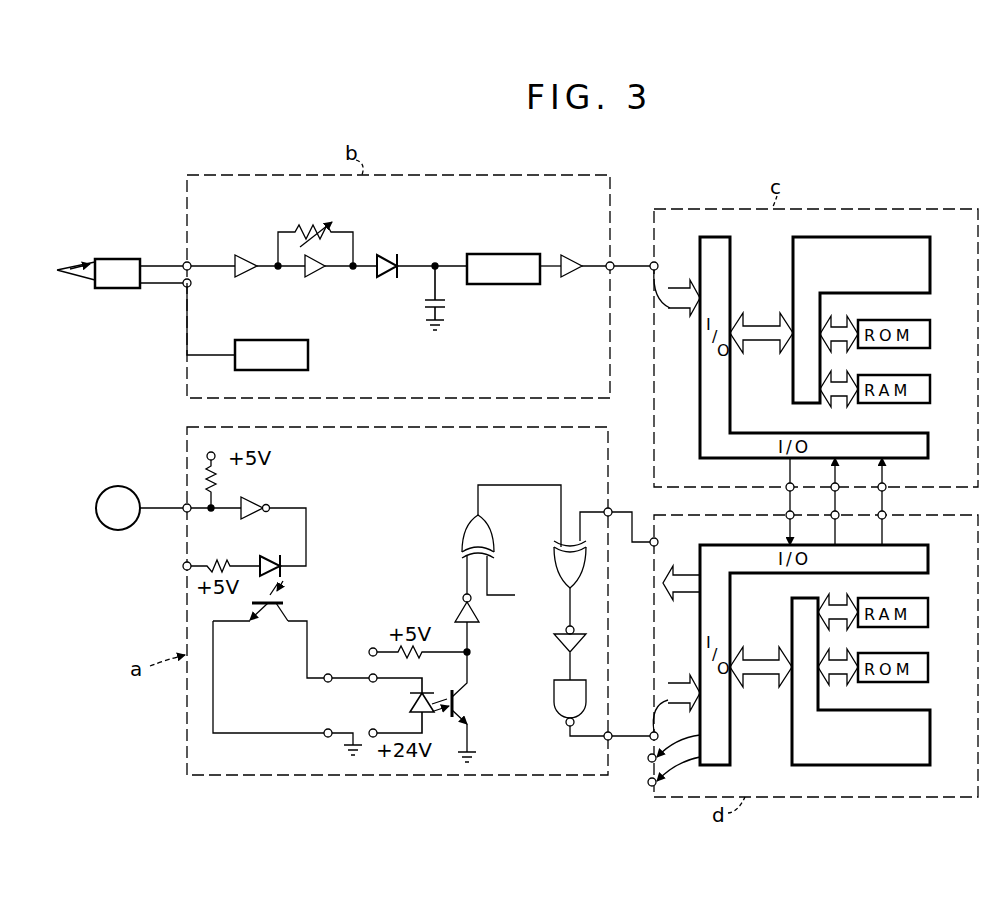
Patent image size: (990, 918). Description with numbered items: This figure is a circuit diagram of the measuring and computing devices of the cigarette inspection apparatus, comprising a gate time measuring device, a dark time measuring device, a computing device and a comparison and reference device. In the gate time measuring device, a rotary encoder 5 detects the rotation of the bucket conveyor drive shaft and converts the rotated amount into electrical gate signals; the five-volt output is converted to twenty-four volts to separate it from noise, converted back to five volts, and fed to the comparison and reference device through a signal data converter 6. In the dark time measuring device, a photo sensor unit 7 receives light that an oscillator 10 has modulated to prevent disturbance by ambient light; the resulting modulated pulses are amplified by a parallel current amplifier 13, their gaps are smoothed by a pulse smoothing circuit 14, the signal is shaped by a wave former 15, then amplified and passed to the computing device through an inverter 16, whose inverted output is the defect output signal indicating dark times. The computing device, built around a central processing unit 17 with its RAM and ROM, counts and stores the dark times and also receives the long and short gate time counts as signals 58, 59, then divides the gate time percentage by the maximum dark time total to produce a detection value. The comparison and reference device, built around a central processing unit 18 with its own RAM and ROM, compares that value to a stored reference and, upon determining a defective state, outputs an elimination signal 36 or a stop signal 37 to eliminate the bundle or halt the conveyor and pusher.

The rotary encoder 5 is at (118, 530).
The signal data converter 6 is at (464, 543).
The photo sensor 7 is at (114, 291).
The oscillator 10 is at (308, 355).
The parallel current amplifier 13 is at (297, 229).
The pulse smoothing circuit 14 is at (385, 257).
The wave former 15 is at (495, 254).
The inverter 16 is at (573, 257).
The central processing unit 17 is at (880, 237).
The central processing unit 18 is at (920, 752).
The elimination signal 36 is at (658, 753).
The stop signal 37 is at (658, 776).
The signal 58 is at (850, 501).
The signal 59 is at (899, 501).